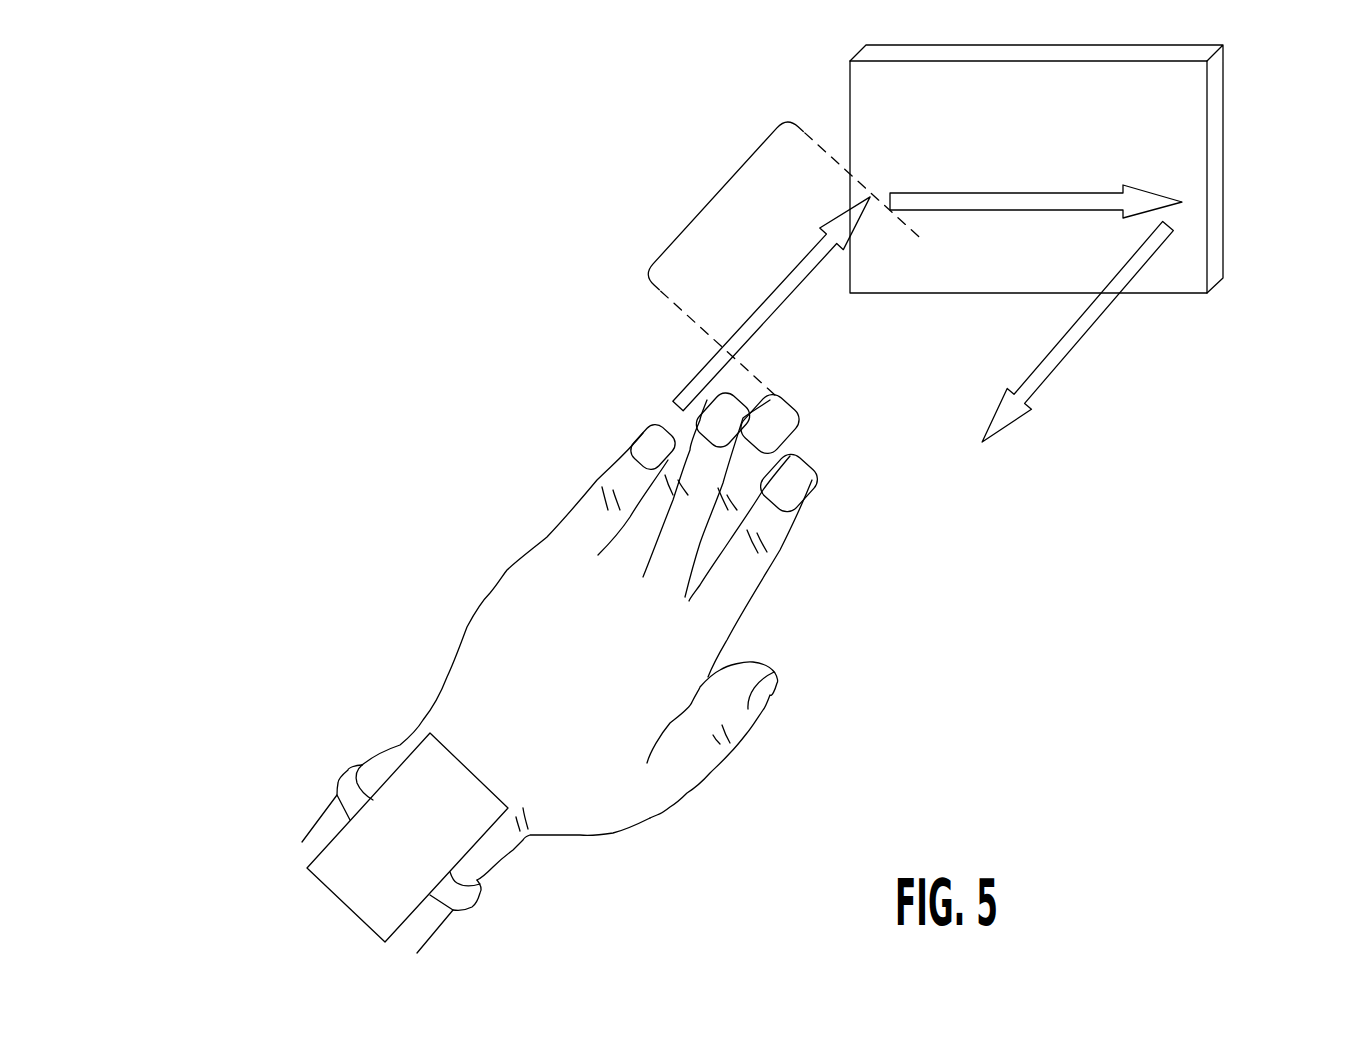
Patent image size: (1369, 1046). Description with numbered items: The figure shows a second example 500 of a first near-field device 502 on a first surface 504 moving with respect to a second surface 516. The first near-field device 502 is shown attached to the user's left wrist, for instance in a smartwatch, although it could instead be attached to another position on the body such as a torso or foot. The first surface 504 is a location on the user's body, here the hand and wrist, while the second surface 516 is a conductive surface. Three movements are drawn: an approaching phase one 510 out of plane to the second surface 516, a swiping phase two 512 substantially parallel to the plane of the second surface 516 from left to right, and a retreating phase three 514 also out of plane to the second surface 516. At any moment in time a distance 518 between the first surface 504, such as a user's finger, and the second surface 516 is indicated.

The example 500 is at (372, 263).
The first near-field device 502 is at (352, 912).
The first surface 504 is at (490, 592).
The approaching (phase 1) 510 is at (775, 312).
The swiping (phase 2) 512 is at (1007, 212).
The retreating (phase 3) 514 is at (1067, 358).
The second surface 516 is at (1210, 152).
The distance 518 is at (716, 192).